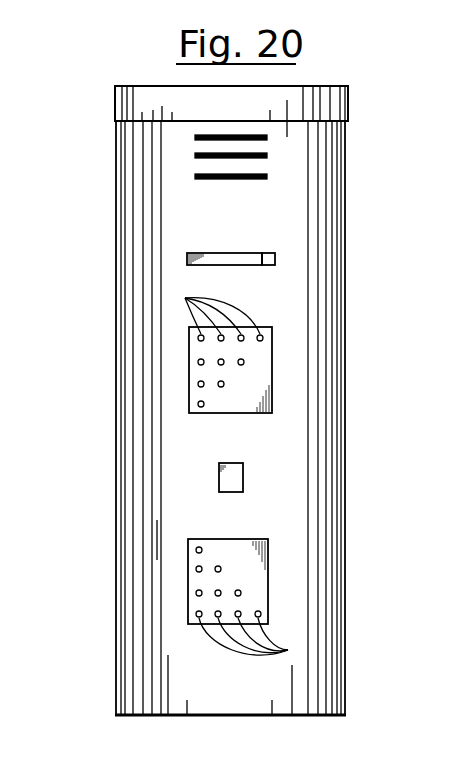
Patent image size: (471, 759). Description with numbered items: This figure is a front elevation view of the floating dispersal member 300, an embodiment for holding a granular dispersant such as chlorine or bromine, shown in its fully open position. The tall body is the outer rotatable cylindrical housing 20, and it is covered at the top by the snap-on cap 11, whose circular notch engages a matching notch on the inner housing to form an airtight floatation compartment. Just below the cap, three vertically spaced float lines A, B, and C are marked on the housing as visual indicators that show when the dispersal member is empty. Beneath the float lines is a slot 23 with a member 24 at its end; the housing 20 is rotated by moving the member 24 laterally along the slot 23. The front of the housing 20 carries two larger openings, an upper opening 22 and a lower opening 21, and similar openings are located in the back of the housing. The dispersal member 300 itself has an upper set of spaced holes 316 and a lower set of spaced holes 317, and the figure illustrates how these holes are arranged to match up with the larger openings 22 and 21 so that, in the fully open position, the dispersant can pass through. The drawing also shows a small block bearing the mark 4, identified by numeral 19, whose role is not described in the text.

The floating dispersal member 300 is at (108, 458).
The rotatable housing 20 is at (345, 357).
The snap-on cap 11 is at (348, 102).
The float line A is at (195, 137).
The float line B is at (195, 155).
The float line C is at (195, 176).
The slot 23 is at (216, 253).
The member 24 is at (268, 253).
The larger opening 22 is at (255, 413).
The upper set of spaced holes 316 is at (205, 310).
The small block 19 is at (229, 492).
The block marking 4 is at (231, 479).
The larger opening 21 is at (208, 539).
The lower set of spaced holes 317 is at (257, 636).